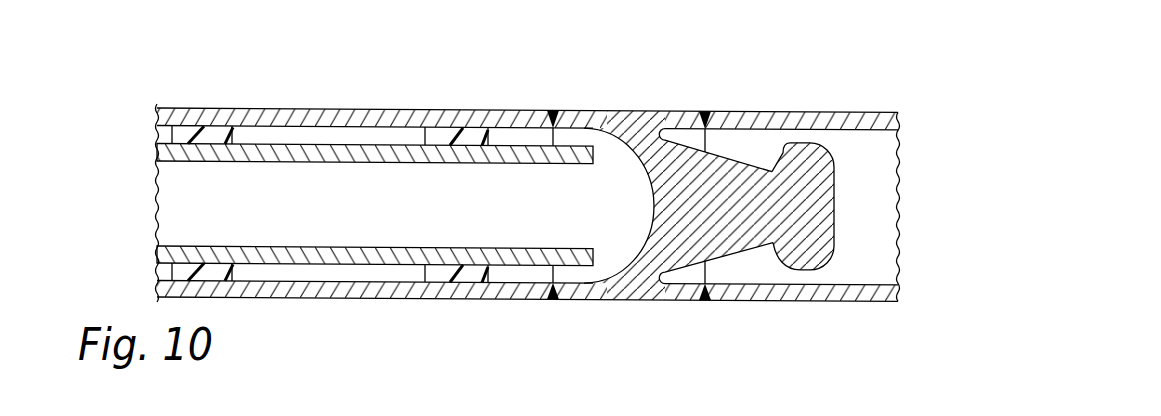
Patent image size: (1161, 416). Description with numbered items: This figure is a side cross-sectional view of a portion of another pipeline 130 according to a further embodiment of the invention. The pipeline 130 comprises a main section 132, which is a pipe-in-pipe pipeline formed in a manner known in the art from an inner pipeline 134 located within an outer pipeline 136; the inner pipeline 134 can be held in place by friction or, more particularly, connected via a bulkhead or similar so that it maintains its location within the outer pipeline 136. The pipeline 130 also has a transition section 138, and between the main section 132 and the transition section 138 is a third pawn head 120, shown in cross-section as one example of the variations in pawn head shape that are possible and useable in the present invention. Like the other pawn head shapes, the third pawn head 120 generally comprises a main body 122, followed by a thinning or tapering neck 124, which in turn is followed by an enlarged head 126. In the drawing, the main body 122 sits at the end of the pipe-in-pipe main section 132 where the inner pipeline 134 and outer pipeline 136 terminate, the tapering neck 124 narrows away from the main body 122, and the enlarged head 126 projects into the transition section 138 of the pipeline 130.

The third pawn head 120 is at (702, 195).
The main body 122 is at (585, 298).
The tapering neck 124 is at (728, 254).
The enlarged head 126 is at (800, 270).
The pipeline 130 is at (557, 205).
The main section 132 is at (557, 253).
The inner pipeline 134 is at (240, 160).
The outer pipeline 136 is at (253, 297).
The transition section 138 is at (872, 132).